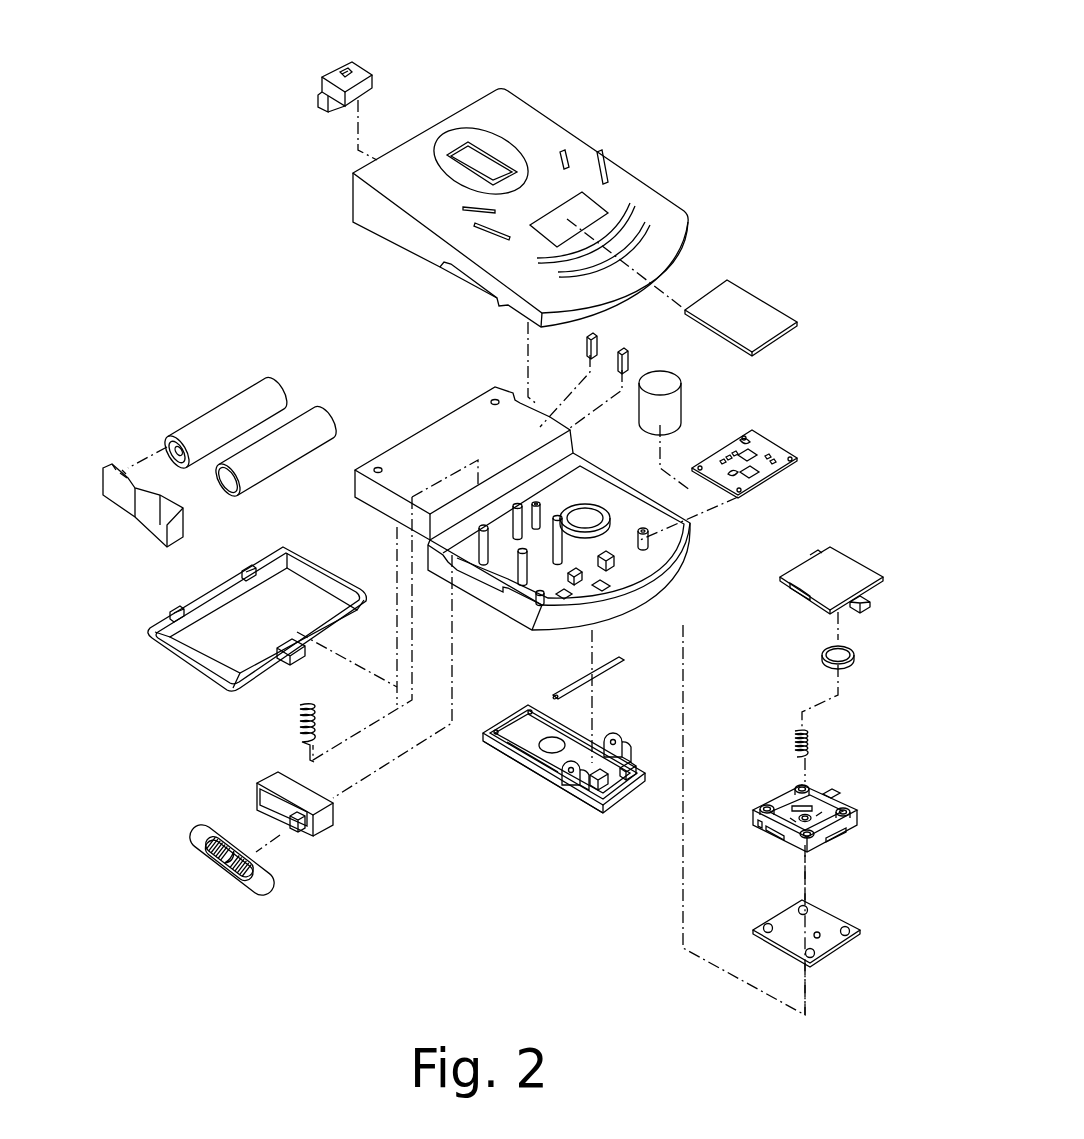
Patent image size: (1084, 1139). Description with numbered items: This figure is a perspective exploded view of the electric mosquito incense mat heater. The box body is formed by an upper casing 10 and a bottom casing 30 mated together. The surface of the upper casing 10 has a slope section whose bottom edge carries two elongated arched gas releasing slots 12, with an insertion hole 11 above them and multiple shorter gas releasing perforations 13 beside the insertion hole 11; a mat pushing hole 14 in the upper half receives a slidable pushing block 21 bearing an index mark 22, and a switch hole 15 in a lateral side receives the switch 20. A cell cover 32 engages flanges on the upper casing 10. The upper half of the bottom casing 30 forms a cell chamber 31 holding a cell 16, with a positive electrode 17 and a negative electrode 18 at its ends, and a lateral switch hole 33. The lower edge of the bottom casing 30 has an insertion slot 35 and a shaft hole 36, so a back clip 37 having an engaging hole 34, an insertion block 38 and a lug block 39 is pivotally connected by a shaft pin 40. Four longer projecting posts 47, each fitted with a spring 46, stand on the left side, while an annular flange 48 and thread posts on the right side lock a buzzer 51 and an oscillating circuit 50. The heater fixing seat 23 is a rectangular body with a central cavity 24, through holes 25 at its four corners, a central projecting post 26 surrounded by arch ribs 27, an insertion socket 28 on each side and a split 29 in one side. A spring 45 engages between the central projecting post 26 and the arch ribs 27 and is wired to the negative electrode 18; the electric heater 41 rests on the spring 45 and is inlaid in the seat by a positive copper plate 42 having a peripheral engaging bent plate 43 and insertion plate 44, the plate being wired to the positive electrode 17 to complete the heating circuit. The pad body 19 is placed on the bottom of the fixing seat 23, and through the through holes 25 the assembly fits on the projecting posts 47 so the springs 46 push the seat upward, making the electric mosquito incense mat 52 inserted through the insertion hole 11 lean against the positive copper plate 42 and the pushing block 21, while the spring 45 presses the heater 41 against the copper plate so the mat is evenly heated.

The upper casing 10 is at (533, 120).
The insertion hole 11 is at (593, 212).
The gas releasing slots 12 is at (650, 227).
The gas releasing perforations 13 is at (605, 160).
The mat pushing hole 14 is at (460, 140).
The switch hole 15 is at (458, 280).
The cell 16 is at (243, 405).
The positive electrode 17 is at (125, 502).
The negative electrode 18 is at (590, 342).
The pad body 19 is at (828, 936).
The switch 20 is at (315, 850).
The pushing block 21 is at (366, 74).
The index mark 22 is at (341, 70).
The heater fixing seat 23 is at (792, 848).
The cavity 24 is at (790, 786).
The through holes 25 is at (765, 808).
The central projecting post 26 is at (818, 792).
The arch ribs 27 is at (846, 800).
The insertion socket 28 is at (770, 832).
The split 29 is at (850, 838).
The bottom casing 30 is at (665, 522).
The cell chamber 31 is at (440, 437).
The cell cover 32 is at (190, 655).
The switch hole 33 is at (487, 578).
The engaging hole 34 is at (548, 748).
The insertion slot 35 is at (610, 592).
The shaft hole 36 is at (570, 600).
The back clip 37 is at (495, 745).
The insertion block 38 is at (604, 788).
The lug block 39 is at (572, 775).
The shaft pin 40 is at (600, 676).
The electric heater 41 is at (850, 662).
The positive copper plate 42 is at (845, 572).
The engaging bent plate 43 is at (872, 610).
The insertion plate 44 is at (803, 598).
The spring 45 is at (797, 727).
The spring 46 is at (298, 722).
The projecting posts 47 is at (515, 520).
The annular flange 48 is at (585, 517).
The oscillating circuit 50 is at (750, 485).
The buzzer 51 is at (670, 387).
The electric mosquito incense mat 52 is at (745, 300).